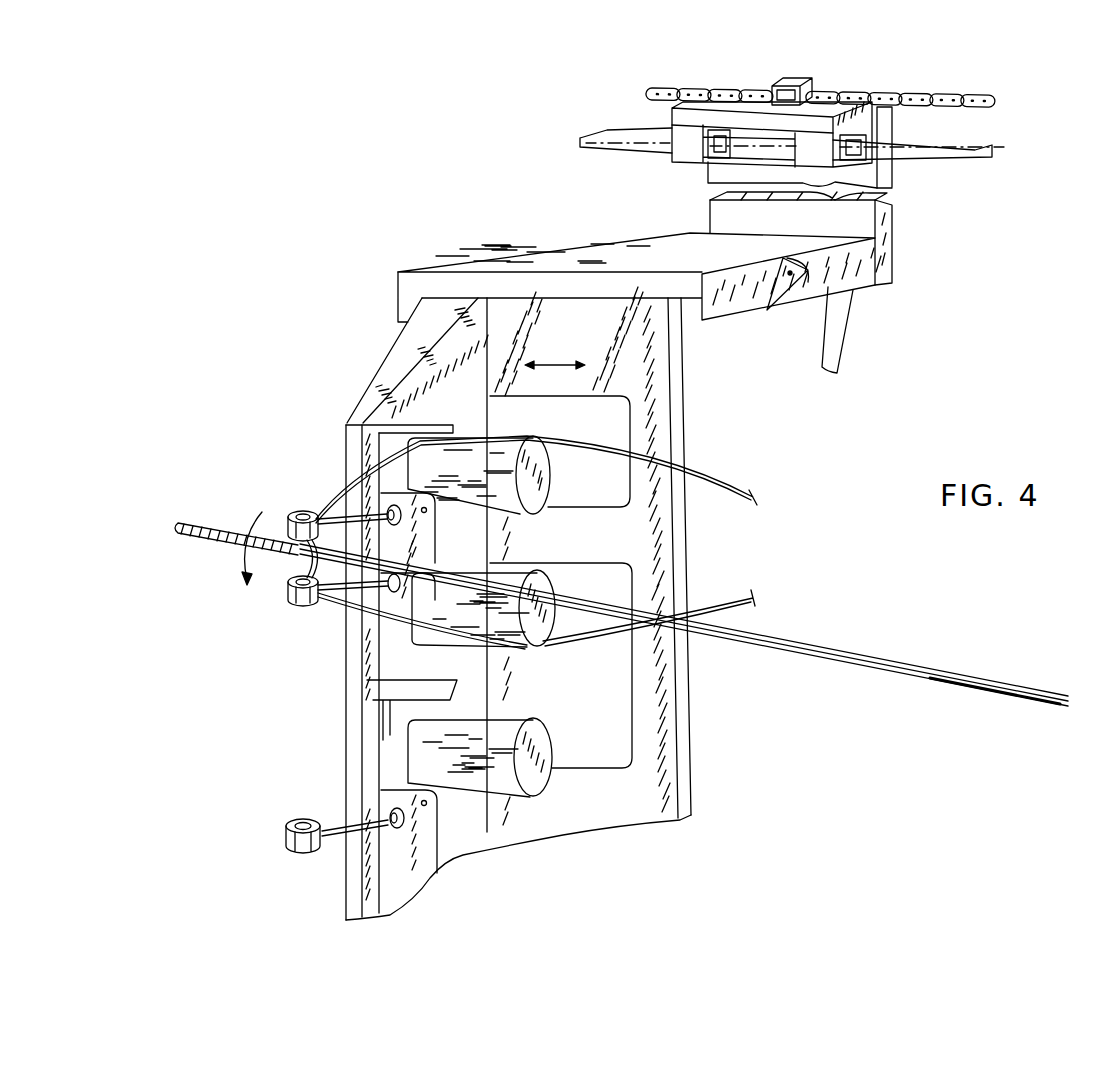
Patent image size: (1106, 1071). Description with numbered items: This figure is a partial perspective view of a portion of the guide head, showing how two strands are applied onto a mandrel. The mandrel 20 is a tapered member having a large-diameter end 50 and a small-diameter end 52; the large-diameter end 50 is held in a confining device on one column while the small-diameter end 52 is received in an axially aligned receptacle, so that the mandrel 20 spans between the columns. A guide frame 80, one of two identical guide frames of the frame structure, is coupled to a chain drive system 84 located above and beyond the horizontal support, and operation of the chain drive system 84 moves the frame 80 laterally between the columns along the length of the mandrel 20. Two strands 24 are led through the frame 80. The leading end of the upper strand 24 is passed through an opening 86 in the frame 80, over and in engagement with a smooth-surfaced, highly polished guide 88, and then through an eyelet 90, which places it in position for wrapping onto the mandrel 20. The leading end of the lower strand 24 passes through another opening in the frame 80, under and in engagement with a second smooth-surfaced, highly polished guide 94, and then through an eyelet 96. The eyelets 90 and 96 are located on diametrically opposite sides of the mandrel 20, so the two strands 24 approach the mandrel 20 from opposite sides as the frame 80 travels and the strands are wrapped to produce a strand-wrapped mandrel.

The mandrel 20 is at (866, 655).
The strands 24 is at (703, 474).
The large-diameter end 50 is at (180, 520).
The small-diameter end 52 is at (1053, 698).
The guide frame 80 is at (691, 815).
The chain drive system 84 is at (964, 90).
The opening 86 is at (567, 397).
The guide 88 is at (541, 470).
The eyelet 90 is at (299, 511).
The guide 94 is at (540, 637).
The eyelet 96 is at (301, 605).